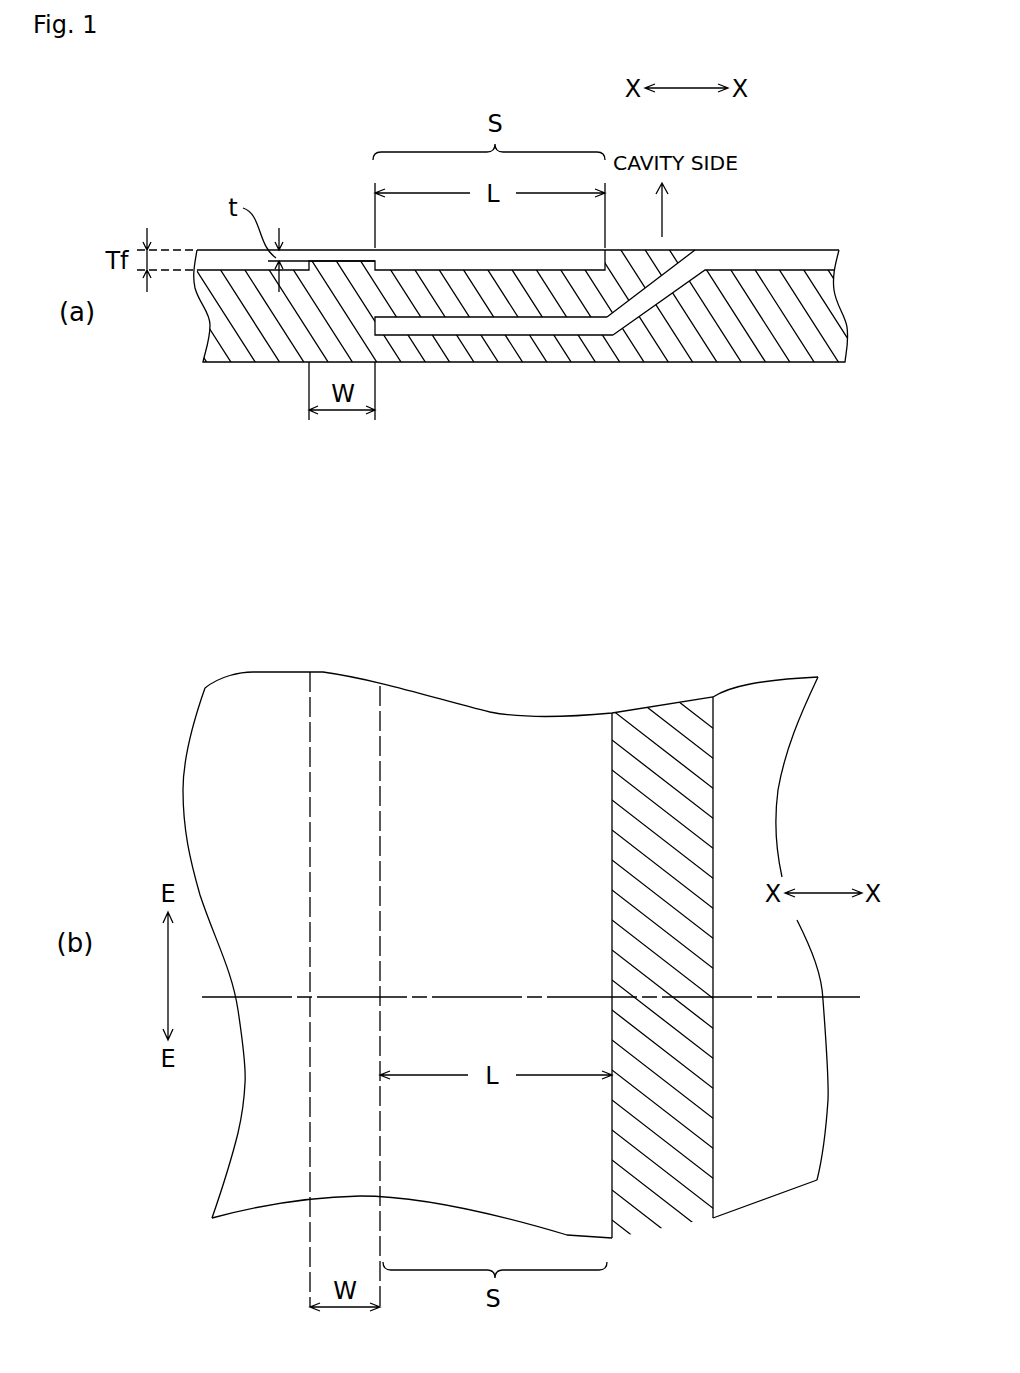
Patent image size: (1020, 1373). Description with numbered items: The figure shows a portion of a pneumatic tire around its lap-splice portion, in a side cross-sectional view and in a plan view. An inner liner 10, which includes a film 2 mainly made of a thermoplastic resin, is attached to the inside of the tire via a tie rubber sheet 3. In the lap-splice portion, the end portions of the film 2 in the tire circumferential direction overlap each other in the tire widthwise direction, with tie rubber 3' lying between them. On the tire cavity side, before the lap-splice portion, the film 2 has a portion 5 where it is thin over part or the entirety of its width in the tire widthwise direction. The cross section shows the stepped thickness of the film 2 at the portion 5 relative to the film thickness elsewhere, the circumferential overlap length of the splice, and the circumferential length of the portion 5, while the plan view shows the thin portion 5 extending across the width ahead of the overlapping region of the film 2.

The film 2 is at (213, 258).
The inner liner 10 is at (232, 697).
The tie rubber sheet 3 is at (498, 339).
The tie rubber 3' is at (557, 810).
The portion where the film is thin 5 is at (337, 258).